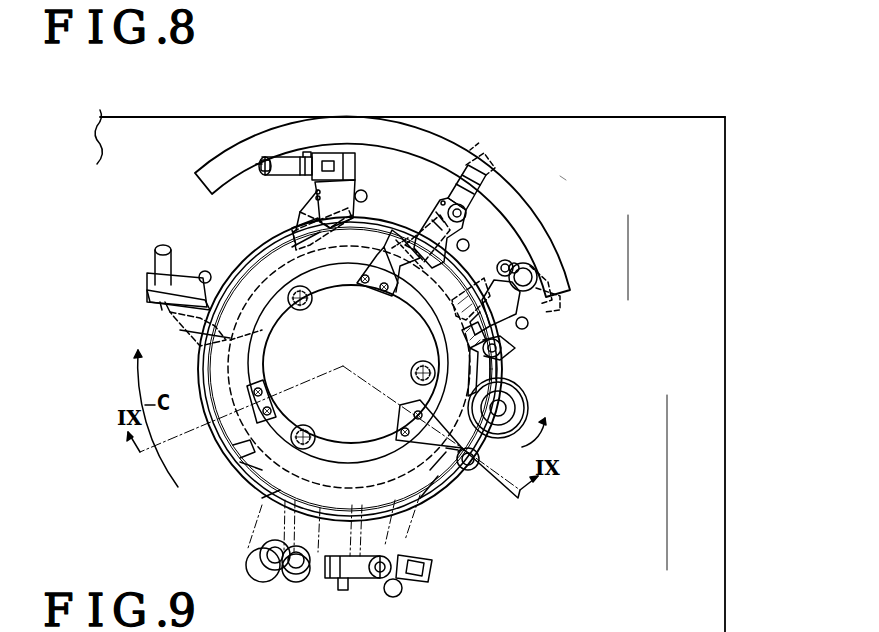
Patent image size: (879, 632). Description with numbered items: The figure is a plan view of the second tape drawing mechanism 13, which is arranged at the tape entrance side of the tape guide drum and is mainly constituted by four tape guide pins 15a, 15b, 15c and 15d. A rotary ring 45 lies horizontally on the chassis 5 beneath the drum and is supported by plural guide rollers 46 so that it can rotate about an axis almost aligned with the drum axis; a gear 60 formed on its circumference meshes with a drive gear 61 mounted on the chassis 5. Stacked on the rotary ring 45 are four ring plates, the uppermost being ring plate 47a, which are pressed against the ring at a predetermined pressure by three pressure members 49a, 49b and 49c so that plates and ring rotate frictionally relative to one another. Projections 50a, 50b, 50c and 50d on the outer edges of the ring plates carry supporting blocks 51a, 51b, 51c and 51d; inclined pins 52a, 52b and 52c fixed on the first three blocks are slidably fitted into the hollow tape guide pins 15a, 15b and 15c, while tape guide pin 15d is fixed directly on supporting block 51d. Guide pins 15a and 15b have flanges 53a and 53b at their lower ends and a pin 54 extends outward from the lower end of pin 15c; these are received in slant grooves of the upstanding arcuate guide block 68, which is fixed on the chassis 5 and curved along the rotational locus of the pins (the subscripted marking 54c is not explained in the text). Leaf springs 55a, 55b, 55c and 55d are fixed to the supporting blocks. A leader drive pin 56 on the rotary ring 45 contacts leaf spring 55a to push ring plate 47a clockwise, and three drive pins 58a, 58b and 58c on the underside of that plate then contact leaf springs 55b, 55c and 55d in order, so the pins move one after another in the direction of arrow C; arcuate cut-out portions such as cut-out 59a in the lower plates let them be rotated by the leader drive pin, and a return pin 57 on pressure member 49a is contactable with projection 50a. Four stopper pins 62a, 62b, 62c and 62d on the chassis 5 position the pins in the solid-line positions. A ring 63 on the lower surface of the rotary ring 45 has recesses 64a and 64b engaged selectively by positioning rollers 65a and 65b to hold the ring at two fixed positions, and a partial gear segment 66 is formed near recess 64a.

The chassis 5 is at (725, 333).
The second tape drawing mechanism 13 is at (566, 176).
The tape guide pin 15a is at (534, 269).
The tape guide pin 15b is at (470, 199).
The tape guide pin 15c is at (287, 162).
The tape guide pin 15d is at (157, 253).
The rotary ring 45 is at (439, 470).
The guide rollers 46 is at (304, 300).
The ring plate 47a is at (250, 472).
The pressure member 49a is at (402, 418).
The pressure member 49b is at (373, 290).
The pressure member 49c is at (266, 392).
The projection 50a is at (518, 307).
The projection 50b is at (457, 230).
The projection 50c is at (350, 192).
The projection 50d is at (214, 285).
The supporting block 51a is at (558, 302).
The supporting block 51b is at (485, 170).
The supporting block 51c is at (345, 153).
The supporting block 51d is at (192, 310).
The pin 52a is at (522, 264).
The pin 52b is at (442, 206).
The pin 52c is at (262, 162).
The flange 53a is at (551, 286).
The flange 53b is at (470, 156).
The pin 54 is at (305, 150).
The adjusting screw 54c is at (334, 592).
The leaf spring 55a is at (466, 320).
The leaf spring 55b is at (420, 229).
The leaf spring 55c is at (296, 238).
The leaf spring 55d is at (202, 340).
The leader drive pin 56 is at (468, 338).
The return pin 57 is at (480, 458).
The drive pin 58a is at (398, 266).
The drive pin 58b is at (290, 238).
The drive pin 58c is at (250, 343).
The arcuate cut-out portion 59a is at (238, 452).
The gear 60 is at (260, 490).
The drive gear 61 is at (528, 401).
The stopper pin 62a is at (529, 325).
The stopper pin 62b is at (469, 247).
The stopper pin 62c is at (366, 199).
The stopper pin 62d is at (205, 271).
The ring 63 is at (426, 498).
The recess 64a is at (476, 374).
The recess 64b is at (457, 276).
The positioning roller 65a is at (502, 357).
The positioning roller 65b is at (472, 472).
The partial gear segment 66 is at (502, 348).
The arcuate guide block 68 is at (398, 135).